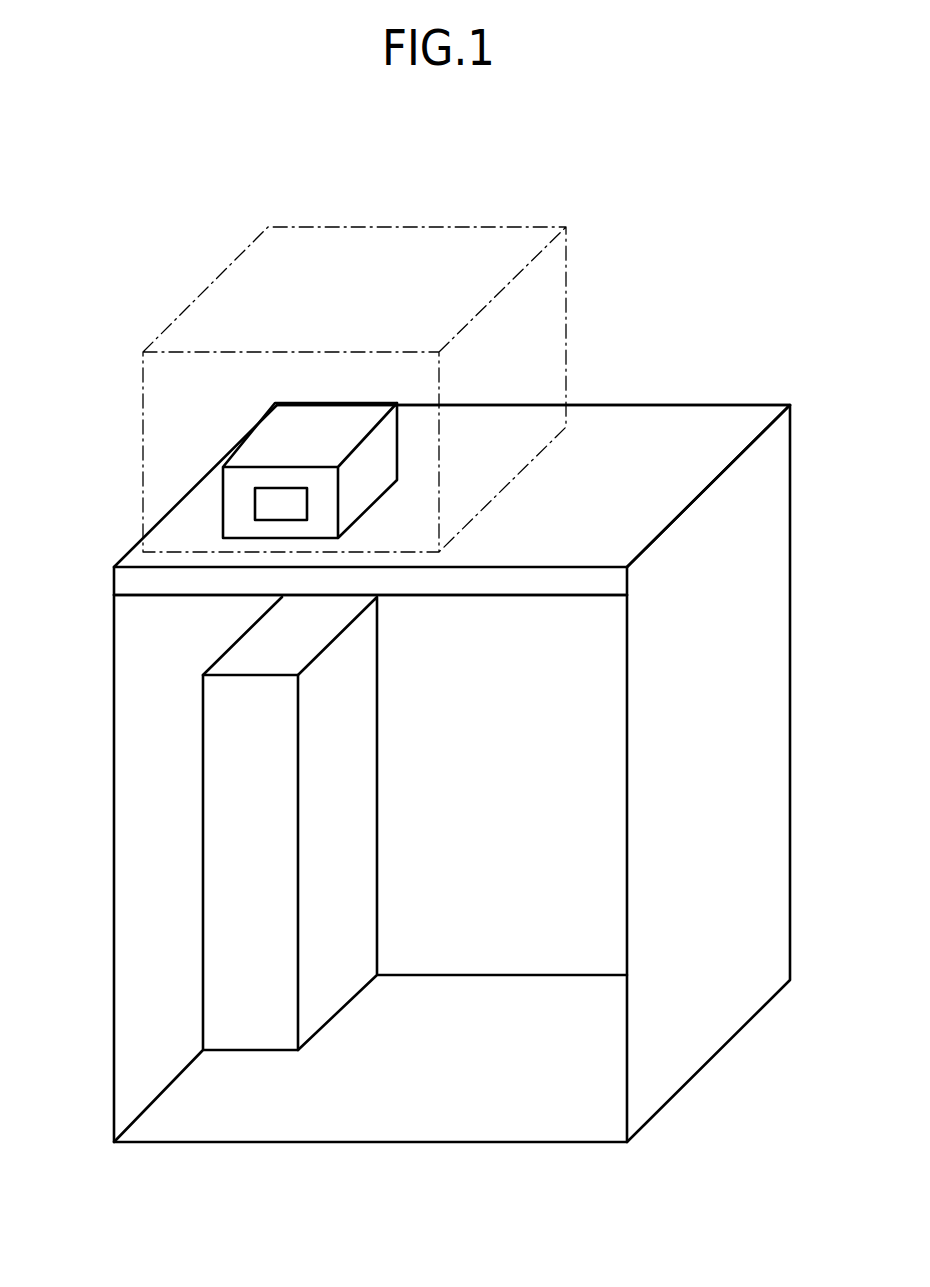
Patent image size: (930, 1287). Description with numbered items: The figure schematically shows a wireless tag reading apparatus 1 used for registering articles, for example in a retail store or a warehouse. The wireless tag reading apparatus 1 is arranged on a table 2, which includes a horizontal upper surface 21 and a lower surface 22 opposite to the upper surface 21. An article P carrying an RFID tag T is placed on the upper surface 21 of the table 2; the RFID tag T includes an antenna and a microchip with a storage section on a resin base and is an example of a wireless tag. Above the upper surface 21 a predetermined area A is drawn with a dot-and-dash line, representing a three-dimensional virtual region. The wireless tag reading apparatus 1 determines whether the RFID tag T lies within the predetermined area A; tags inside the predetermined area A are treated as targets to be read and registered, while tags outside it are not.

The wireless tag reading apparatus 1 is at (203, 830).
The table 2 is at (113, 582).
The upper surface 21 is at (725, 430).
The lower surface 22 is at (527, 597).
The predetermined area A is at (567, 300).
The article P is at (317, 403).
The RFID tag T is at (267, 507).